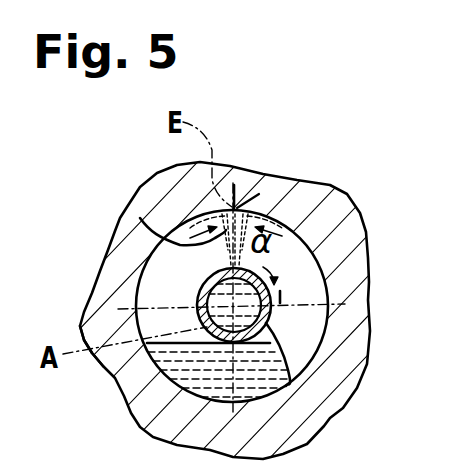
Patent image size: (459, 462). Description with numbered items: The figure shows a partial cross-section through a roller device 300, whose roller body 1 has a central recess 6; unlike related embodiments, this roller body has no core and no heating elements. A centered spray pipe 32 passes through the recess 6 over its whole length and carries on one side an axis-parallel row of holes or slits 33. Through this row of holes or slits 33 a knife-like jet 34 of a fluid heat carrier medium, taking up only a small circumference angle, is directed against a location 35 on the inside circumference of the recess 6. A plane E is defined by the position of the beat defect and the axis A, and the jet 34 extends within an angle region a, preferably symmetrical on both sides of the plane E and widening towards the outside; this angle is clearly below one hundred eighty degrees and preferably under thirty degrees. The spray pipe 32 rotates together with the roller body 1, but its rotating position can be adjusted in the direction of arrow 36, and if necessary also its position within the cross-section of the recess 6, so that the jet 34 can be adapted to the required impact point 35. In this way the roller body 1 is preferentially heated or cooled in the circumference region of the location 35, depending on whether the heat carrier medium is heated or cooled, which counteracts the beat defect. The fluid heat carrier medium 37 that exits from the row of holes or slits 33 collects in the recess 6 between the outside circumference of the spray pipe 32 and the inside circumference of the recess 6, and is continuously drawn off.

The roller device 300 is at (134, 189).
The roller body 1 is at (313, 190).
The central recess 6 is at (321, 270).
The location on the inside circumference of the recess 35 is at (237, 208).
The jet 34 is at (140, 218).
The row of holes or slits 33 is at (204, 279).
The arrow 36 is at (285, 289).
The fluid heat carrier medium 37 is at (131, 412).
The spray pipe 32 is at (323, 412).